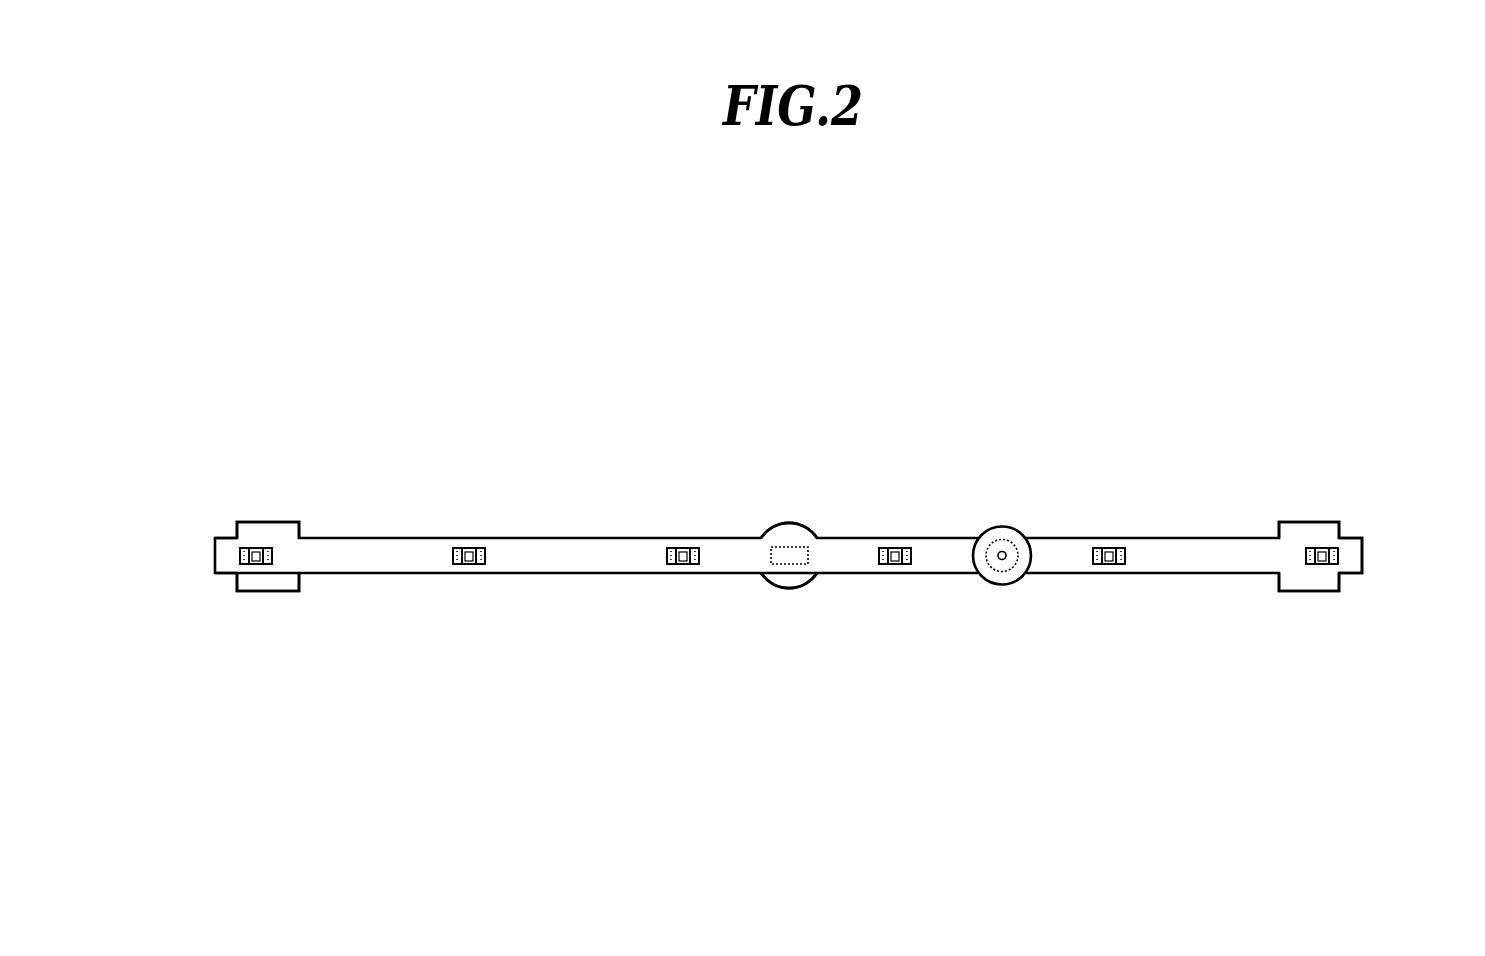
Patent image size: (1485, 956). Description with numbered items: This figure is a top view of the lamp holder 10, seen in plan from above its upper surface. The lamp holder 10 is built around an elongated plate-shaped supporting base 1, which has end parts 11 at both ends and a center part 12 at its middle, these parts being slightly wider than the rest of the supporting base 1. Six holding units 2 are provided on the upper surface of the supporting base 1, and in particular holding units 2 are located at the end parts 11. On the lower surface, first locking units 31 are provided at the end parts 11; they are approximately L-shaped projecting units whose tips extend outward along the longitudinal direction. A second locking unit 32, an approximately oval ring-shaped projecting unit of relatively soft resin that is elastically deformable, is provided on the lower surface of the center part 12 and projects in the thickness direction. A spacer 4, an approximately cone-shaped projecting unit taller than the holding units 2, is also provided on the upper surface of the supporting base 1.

The lamp holder 10 is at (810, 337).
The supporting base 1 is at (562, 557).
The end parts 11 is at (270, 582).
The center part 12 is at (787, 535).
The holding units 2 is at (254, 548).
The first locking units 31 is at (227, 554).
The second locking unit 32 is at (788, 565).
The spacer 4 is at (1003, 548).